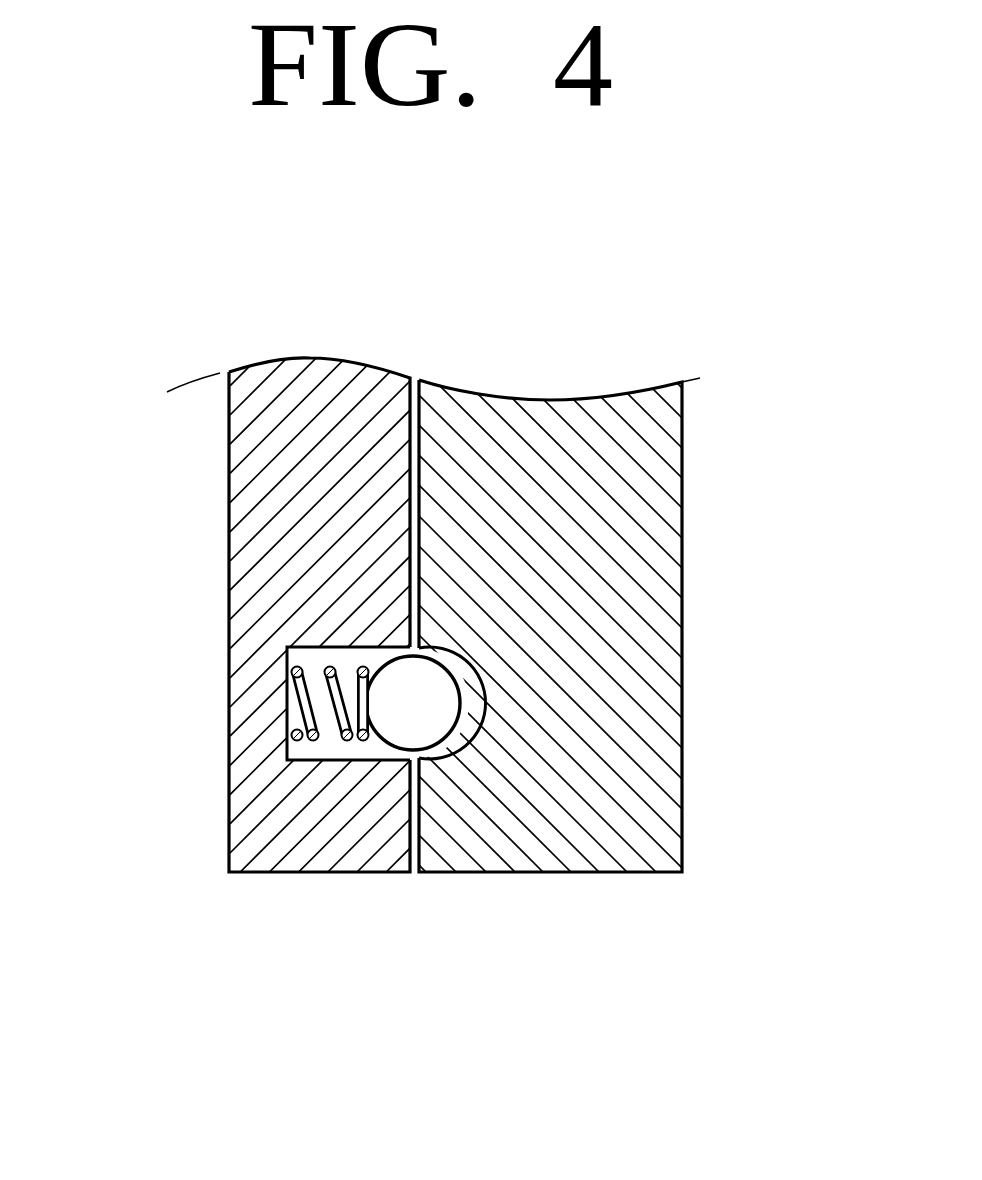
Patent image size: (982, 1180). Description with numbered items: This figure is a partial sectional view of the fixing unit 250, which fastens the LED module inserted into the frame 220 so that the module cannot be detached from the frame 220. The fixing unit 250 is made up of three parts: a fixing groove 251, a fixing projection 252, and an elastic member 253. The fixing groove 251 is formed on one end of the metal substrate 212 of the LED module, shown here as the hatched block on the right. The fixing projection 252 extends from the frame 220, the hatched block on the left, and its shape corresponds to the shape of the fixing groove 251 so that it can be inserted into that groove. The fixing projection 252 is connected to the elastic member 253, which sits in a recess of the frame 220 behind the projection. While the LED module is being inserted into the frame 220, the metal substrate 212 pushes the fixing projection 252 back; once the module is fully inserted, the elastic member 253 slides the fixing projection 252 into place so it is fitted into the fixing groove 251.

The metal substrate 212 is at (651, 613).
The frame 220 is at (257, 550).
The fixing unit 250 is at (444, 866).
The fixing groove 251 is at (469, 703).
The fixing projection 252 is at (427, 717).
The elastic member 253 is at (345, 740).